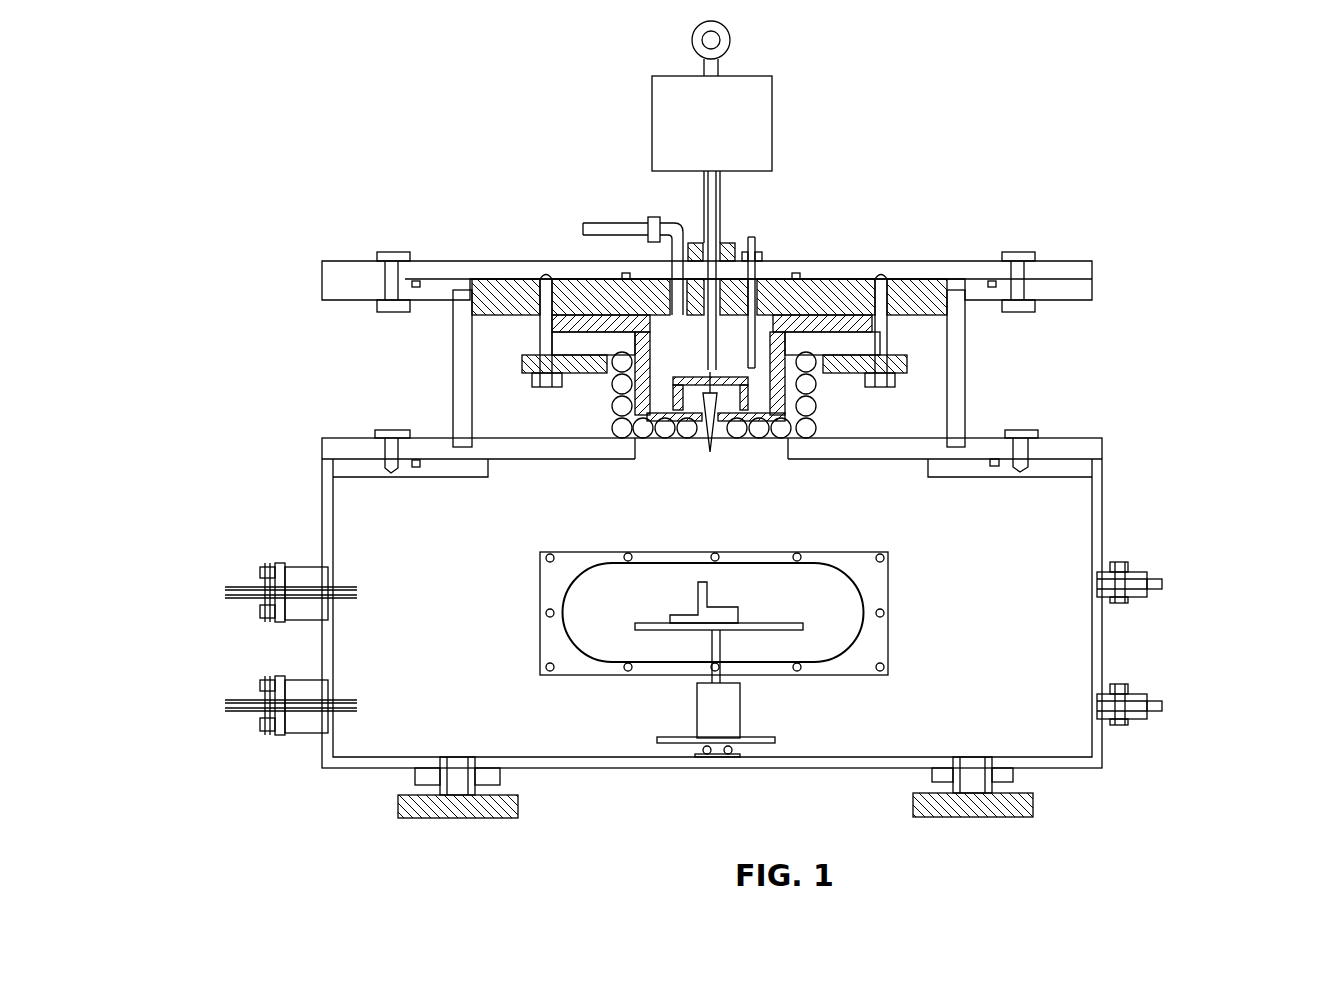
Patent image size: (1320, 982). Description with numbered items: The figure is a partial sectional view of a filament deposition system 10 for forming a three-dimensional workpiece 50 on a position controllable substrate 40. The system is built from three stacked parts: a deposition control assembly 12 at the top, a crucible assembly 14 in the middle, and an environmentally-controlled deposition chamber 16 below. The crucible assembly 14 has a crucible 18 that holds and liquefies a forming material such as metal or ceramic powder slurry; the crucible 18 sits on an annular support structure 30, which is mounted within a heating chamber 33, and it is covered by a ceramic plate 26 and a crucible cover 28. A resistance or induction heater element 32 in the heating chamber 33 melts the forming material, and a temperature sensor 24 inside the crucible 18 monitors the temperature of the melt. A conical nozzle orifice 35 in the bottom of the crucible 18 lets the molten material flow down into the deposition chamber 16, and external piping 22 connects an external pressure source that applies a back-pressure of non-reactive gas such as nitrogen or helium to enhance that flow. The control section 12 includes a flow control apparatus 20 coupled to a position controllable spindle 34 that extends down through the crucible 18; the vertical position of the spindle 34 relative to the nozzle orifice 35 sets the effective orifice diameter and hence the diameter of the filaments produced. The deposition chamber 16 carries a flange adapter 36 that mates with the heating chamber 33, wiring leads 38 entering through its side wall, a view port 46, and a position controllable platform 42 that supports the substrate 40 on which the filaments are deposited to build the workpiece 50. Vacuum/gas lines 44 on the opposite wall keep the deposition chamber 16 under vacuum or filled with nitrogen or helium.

The filament deposition system 10 is at (560, 79).
The deposition control assembly 12 is at (1305, 77).
The crucible assembly 14 is at (1305, 261).
The environmentally-controlled deposition chamber 16 is at (1305, 438).
The crucible 18 is at (597, 318).
The flow control apparatus 20 is at (773, 120).
The external piping 22 is at (603, 232).
The temperature sensor 24 is at (757, 238).
The ceramic plate 26 is at (908, 285).
The crucible cover 28 is at (328, 262).
The annular support structure 30 is at (587, 372).
The heater element 32 is at (822, 398).
The heating chamber 33 is at (960, 387).
The position controllable spindle 34 is at (712, 440).
The conical nozzle orifice 35 is at (702, 427).
The flange adapter 36 is at (320, 445).
The wiring leads 38 is at (371, 700).
The position controllable substrate 40 is at (803, 626).
The position controllable platform 42 is at (740, 713).
The vacuum/gas lines 44 is at (1037, 697).
The view port 46 is at (610, 645).
The workpiece 50 is at (740, 613).